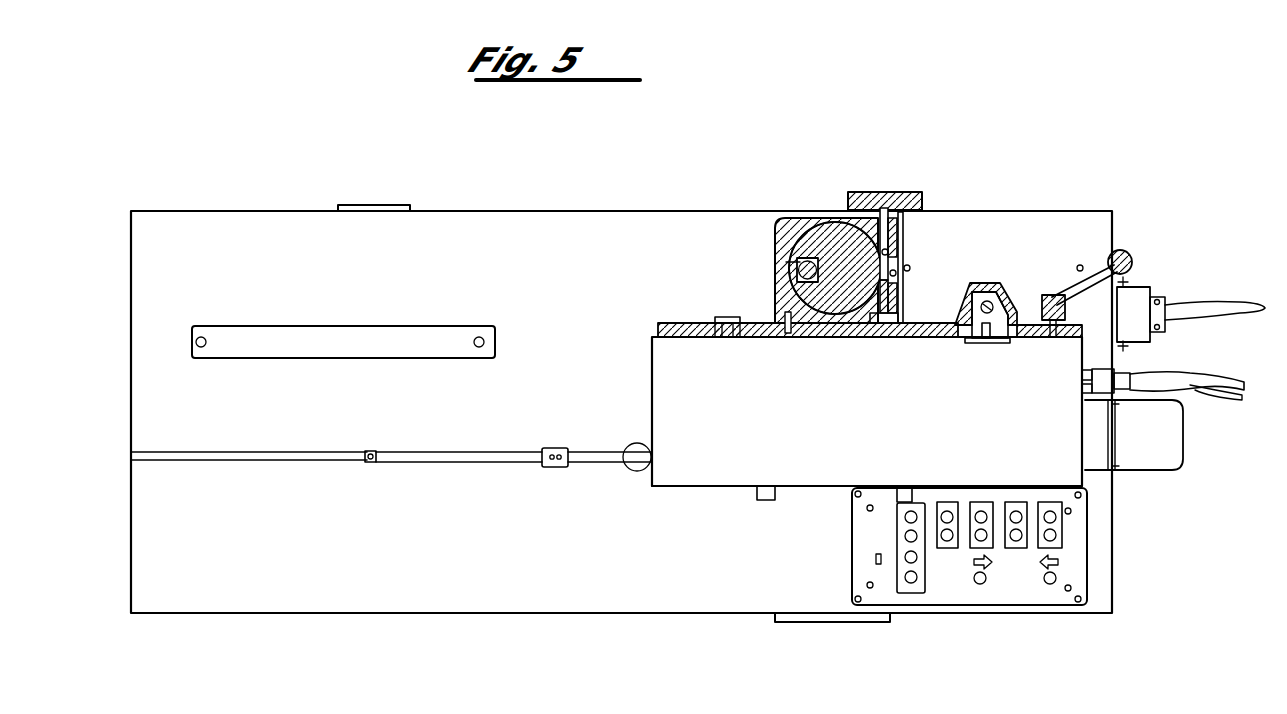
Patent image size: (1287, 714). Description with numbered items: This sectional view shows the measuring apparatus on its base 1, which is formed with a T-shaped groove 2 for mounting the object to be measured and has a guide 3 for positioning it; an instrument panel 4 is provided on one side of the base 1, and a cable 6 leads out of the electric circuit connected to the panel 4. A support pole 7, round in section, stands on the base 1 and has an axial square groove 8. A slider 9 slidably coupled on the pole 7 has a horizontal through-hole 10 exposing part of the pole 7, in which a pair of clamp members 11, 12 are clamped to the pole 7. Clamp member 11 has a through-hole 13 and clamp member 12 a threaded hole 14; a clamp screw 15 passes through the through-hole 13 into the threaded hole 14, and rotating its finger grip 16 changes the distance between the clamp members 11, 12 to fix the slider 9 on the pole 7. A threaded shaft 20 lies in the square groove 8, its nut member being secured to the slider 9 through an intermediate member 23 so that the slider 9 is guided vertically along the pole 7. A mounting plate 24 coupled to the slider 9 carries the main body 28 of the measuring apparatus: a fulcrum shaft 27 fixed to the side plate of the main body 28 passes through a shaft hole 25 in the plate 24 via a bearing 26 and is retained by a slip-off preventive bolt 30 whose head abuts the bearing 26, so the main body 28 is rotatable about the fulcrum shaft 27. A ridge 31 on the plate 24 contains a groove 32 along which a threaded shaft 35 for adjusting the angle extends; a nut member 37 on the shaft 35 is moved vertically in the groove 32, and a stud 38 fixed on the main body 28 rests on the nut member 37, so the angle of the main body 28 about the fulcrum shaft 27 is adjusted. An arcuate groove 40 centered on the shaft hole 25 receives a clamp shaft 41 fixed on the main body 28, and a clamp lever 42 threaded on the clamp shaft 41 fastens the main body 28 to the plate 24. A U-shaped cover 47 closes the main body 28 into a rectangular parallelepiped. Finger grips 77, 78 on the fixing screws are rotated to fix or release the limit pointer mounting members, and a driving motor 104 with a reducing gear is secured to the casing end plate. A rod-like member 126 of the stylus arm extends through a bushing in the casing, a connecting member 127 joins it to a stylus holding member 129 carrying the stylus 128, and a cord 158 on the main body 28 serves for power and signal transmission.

The base 1 is at (540, 612).
The T-shaped groove 2 is at (270, 452).
The guide 3 is at (375, 333).
The instrument panel 4 is at (856, 541).
The cable 6 is at (1195, 311).
The support pole 7 is at (833, 232).
The square groove 8 is at (808, 257).
The slider 9 is at (780, 238).
The horizontal through-hole 10 is at (907, 274).
The clamp member 11 is at (903, 236).
The clamp member 12 is at (890, 318).
The through-hole 13 is at (893, 255).
The threaded hole 14 is at (895, 292).
The clamp screw 15 is at (883, 208).
The finger grip 16 is at (905, 195).
The threaded shaft 20 is at (797, 271).
The intermediate member 23 is at (790, 264).
The mounting plate 24 is at (660, 323).
The shaft hole 25 is at (702, 338).
The bearing 26 is at (715, 323).
The fulcrum shaft 27 is at (718, 317).
The main body of the measuring apparatus 28 is at (723, 483).
The slip-off preventive bolt 30 is at (736, 317).
The ridge 31 is at (975, 284).
The groove 32 is at (990, 292).
The threaded shaft 35 is at (993, 307).
The nut member 37 is at (1000, 343).
The stud 38 is at (984, 338).
The arcuate groove 40 is at (1056, 337).
The clamp shaft 41 is at (1066, 320).
The clamp lever 42 is at (1107, 262).
The cover 47 is at (652, 402).
The finger grip 77 is at (772, 502).
The finger grip 78 is at (897, 492).
The driving motor 104 is at (1168, 462).
The rod-like member 126 is at (617, 464).
The connecting member 127 is at (563, 448).
The stylus 128 is at (373, 451).
The stylus holding member 129 is at (448, 452).
The cord 158 is at (1143, 378).